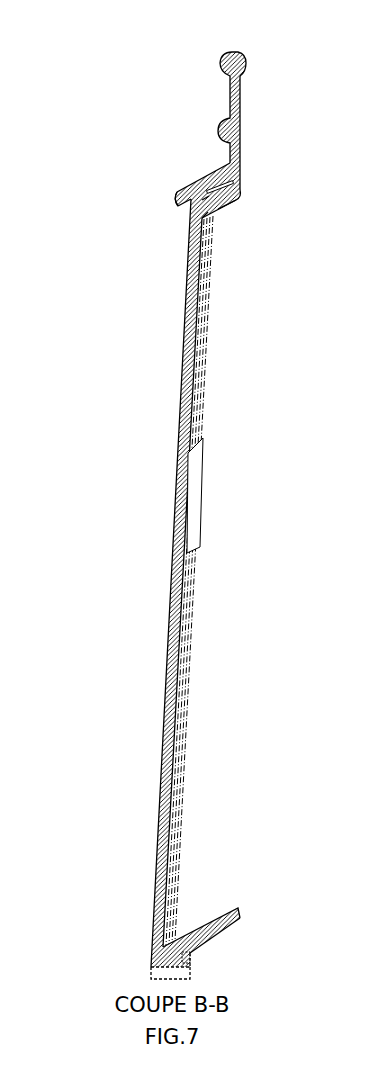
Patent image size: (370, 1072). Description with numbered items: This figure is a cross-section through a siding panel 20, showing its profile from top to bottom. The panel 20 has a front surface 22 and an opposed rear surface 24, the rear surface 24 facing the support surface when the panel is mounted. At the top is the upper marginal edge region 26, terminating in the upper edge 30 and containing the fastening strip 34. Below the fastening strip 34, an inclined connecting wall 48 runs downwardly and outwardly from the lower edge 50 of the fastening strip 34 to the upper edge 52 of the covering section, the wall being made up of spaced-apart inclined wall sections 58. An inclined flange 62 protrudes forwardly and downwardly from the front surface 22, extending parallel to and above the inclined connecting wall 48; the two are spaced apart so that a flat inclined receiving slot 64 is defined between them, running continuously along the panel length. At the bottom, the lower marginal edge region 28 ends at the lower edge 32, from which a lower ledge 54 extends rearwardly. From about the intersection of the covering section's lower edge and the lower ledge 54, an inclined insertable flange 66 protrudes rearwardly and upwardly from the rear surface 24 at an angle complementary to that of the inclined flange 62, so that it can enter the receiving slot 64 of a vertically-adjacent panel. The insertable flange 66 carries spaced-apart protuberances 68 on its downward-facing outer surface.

The panel 20 is at (95, 305).
The front surface 22 is at (175, 523).
The rear surface 24 is at (204, 482).
The upper marginal edge region 26 is at (228, 166).
The lower marginal edge region 28 is at (183, 818).
The upper edge 30 is at (232, 52).
The lower edge 32 is at (150, 976).
The fastening strip 34 is at (241, 111).
The inclined connecting wall 48 is at (240, 195).
The lower edge of the fastening strip 50 is at (238, 164).
The upper edge of the covering section 52 is at (203, 210).
The lower ledge 54 is at (188, 966).
The inclined wall section 58 is at (226, 202).
The inclined flange 62 is at (183, 195).
The inclined receiving slot 64 is at (208, 195).
The inclined insertable flange 66 is at (219, 920).
The protuberances 68 is at (233, 926).